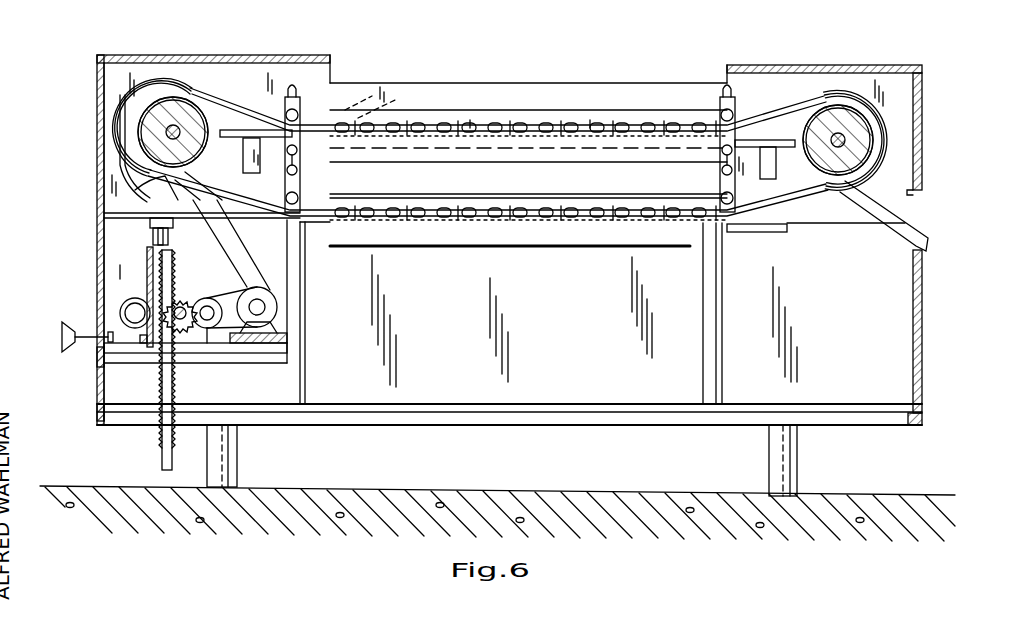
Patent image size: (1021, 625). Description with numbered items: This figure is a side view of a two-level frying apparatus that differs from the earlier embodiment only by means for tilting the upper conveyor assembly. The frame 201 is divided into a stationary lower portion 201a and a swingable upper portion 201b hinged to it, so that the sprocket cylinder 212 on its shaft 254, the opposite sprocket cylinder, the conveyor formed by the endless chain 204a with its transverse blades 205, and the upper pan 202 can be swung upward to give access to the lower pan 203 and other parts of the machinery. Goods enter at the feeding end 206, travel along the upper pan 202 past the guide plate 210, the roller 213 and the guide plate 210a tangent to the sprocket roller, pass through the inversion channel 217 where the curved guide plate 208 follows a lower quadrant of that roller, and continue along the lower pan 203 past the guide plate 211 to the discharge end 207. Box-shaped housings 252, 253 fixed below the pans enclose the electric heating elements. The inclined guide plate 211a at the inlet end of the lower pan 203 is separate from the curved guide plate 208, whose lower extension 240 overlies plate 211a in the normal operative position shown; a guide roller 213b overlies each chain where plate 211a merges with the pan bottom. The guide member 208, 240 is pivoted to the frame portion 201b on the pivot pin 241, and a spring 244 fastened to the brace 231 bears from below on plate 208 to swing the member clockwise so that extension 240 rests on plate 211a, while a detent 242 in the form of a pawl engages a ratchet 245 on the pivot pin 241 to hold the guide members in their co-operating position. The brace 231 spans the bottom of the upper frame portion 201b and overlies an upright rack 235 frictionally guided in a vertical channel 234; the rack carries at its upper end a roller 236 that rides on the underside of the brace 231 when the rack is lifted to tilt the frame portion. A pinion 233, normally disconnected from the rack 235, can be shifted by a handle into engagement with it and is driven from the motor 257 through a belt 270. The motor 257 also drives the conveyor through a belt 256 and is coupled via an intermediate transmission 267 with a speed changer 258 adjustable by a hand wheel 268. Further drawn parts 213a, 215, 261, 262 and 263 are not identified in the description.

The frame 201 is at (412, 432).
The stationary lower frame portion 201a is at (97, 370).
The swingable upper frame portion 201b is at (97, 70).
The upper pan 202 is at (537, 150).
The lower pan 203 is at (500, 228).
The conveyor chain 204a is at (638, 124).
The transverse blades 205 is at (560, 125).
The feeding end 206 is at (787, 65).
The discharge end 207 is at (918, 210).
The curved guide plate 208 is at (118, 140).
The guide plate 210 is at (772, 130).
The guide plate 210a is at (240, 112).
The guide plate 211 is at (803, 212).
The inclined guide plate 211a is at (232, 178).
The sprocket cylinder 212 is at (848, 115).
The roller 213 is at (725, 95).
The left post 213a is at (300, 88).
The guide roller 213b is at (305, 176).
The housing floor 215 is at (883, 226).
The inversion channel 217 is at (133, 78).
The brace 231 is at (150, 236).
The pinion 233 is at (178, 302).
The vertical channel 234 is at (195, 306).
The rack 235 is at (160, 452).
The roller 236 is at (146, 266).
The lower extension 240 is at (228, 236).
The pivot pin 241 is at (150, 222).
The detent 242 is at (166, 235).
The spring 244 is at (155, 190).
The ratchet 245 is at (165, 210).
The box-shaped housing 252 is at (468, 160).
The box-shaped housing 253 is at (436, 248).
The shaft 254 is at (848, 145).
The belt 256 is at (257, 262).
The motor 257 is at (283, 310).
The speed changer 258 is at (125, 312).
The dashed guide 261 is at (372, 90).
The plate 262 is at (388, 160).
The dashed guide 263 is at (400, 93).
The intermediate transmission 267 is at (200, 345).
The hand wheel 268 is at (60, 341).
The belt 270 is at (287, 340).